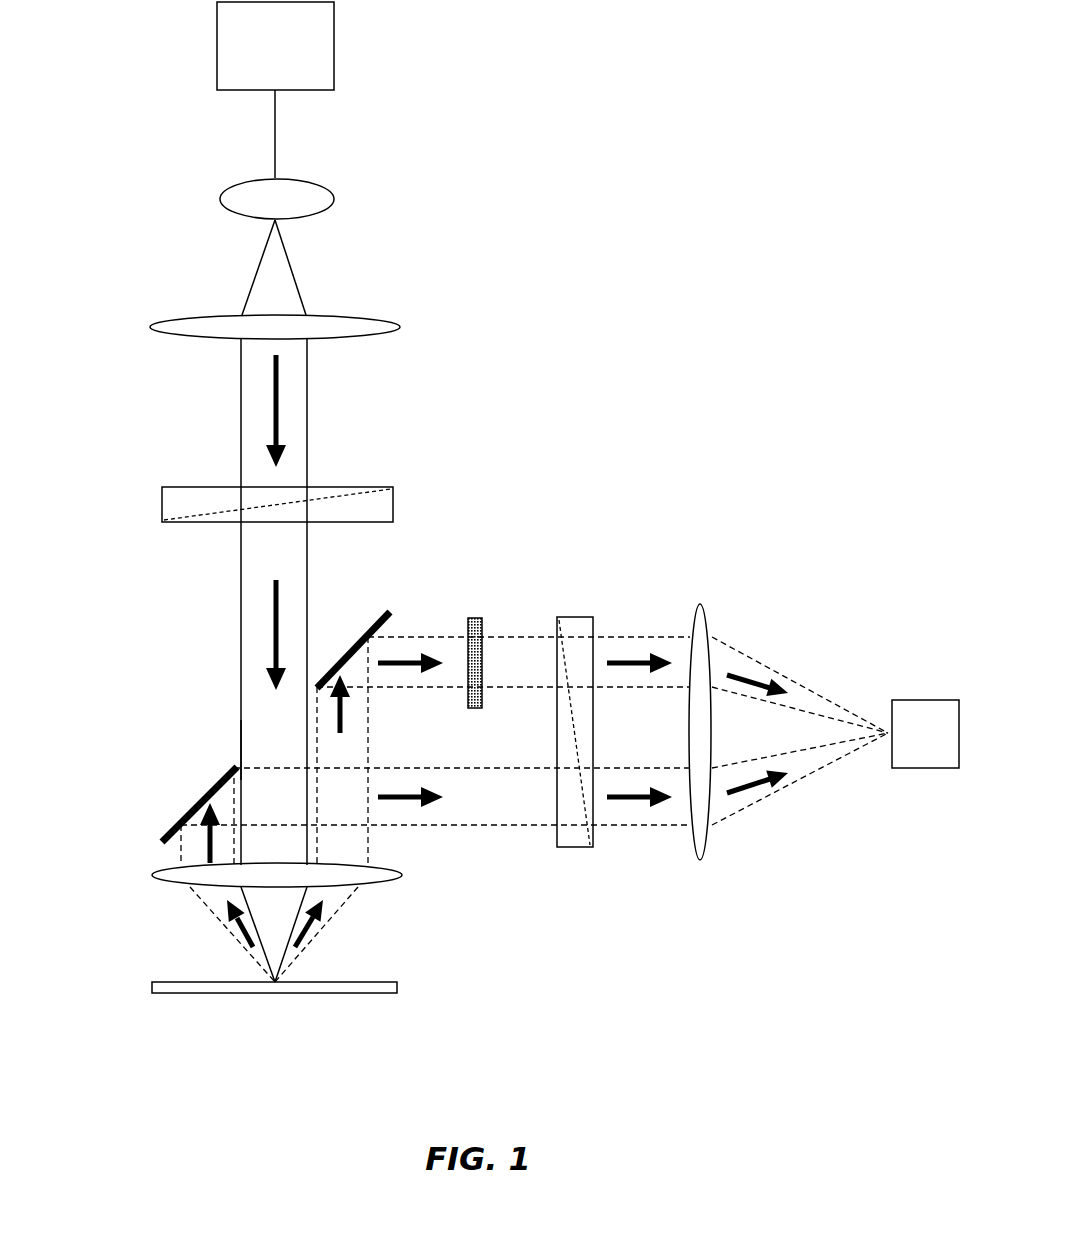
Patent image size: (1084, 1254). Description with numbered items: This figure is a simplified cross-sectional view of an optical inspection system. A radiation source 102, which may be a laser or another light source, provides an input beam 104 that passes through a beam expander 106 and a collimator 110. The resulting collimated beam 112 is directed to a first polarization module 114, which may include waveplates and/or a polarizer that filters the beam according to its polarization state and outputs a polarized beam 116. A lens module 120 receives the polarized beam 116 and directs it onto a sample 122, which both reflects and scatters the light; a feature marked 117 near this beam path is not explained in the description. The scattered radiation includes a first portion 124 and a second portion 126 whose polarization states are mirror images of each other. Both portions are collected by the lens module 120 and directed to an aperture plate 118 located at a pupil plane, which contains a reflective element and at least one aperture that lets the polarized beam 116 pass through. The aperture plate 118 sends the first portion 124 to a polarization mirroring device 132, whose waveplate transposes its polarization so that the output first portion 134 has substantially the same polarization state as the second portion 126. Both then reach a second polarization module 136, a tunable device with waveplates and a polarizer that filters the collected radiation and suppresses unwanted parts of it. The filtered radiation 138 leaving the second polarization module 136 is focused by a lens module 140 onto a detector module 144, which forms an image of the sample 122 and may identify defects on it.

The radiation source 102 is at (275, 46).
The input beam 104 is at (277, 143).
The beam expander 106 is at (222, 198).
The collimator 110 is at (405, 326).
The collimated beam 112 is at (241, 445).
The first polarization module 114 is at (162, 487).
The polarized beam 116 is at (241, 645).
The beam portion 117 is at (226, 746).
The aperture plate 118 is at (162, 840).
The lens module 120 is at (152, 875).
The sample 122 is at (152, 982).
The first portion of scattered radiation 124 is at (323, 927).
The second portion of scattered radiation 126 is at (203, 902).
The polarization mirroring device 132 is at (470, 617).
The first portion of scattered radiation output from polarization mirroring device 134 is at (497, 637).
The second polarization module 136 is at (557, 845).
The filtered radiation 138 is at (667, 827).
The lens module 140 is at (698, 603).
The detector module 144 is at (933, 700).